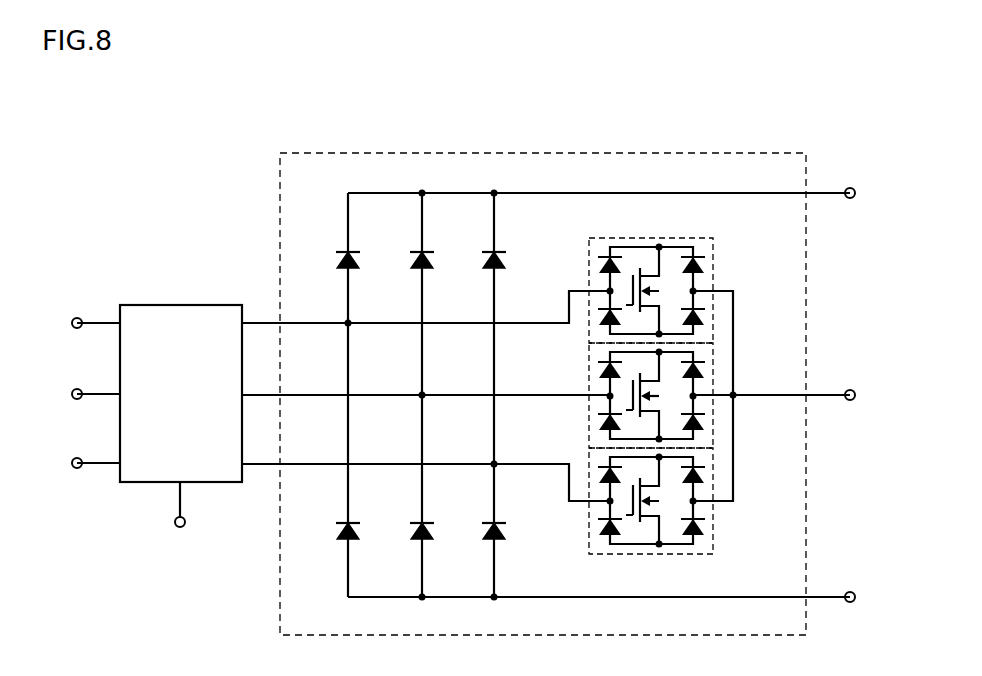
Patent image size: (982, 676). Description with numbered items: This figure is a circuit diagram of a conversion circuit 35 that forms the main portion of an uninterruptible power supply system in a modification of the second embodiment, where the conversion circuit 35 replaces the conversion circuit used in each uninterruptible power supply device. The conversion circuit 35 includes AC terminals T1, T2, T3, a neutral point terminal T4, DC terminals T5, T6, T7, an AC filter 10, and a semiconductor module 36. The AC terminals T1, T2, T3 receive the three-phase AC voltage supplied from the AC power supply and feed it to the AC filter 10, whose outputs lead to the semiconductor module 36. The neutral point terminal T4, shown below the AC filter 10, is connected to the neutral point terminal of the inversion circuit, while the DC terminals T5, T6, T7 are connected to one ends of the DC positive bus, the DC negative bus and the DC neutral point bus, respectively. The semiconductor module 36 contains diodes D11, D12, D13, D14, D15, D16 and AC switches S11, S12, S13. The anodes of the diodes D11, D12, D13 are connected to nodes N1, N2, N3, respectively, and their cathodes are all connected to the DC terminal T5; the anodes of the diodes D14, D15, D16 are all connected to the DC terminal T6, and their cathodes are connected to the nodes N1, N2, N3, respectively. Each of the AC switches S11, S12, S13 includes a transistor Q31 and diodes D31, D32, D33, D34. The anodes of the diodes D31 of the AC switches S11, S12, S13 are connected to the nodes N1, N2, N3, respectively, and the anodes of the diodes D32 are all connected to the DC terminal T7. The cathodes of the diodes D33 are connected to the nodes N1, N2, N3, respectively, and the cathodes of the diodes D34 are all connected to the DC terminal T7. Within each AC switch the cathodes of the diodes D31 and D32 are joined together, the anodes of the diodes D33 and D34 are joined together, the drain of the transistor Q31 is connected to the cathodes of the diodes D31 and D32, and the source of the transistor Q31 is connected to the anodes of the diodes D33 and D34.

The conversion circuit 35 is at (148, 120).
The semiconductor module 36 is at (368, 153).
The AC filter 10 is at (180, 305).
The AC terminal T1 is at (73, 318).
The AC terminal T2 is at (73, 389).
The AC terminal T3 is at (73, 458).
The neutral point terminal T4 is at (180, 527).
The DC terminal T5 is at (854, 188).
The DC terminal T6 is at (854, 592).
The DC terminal T7 is at (854, 390).
The node N1 is at (345, 327).
The node N2 is at (418, 399).
The node N3 is at (490, 462).
The diode D11 is at (342, 250).
The diode D12 is at (416, 250).
The diode D13 is at (488, 250).
The diode D14 is at (342, 522).
The diode D15 is at (416, 522).
The diode D16 is at (488, 522).
The diode D31 is at (606, 256).
The diode D32 is at (697, 256).
The diode D33 is at (604, 325).
The diode D34 is at (700, 313).
The transistor Q31 is at (636, 268).
The AC switch S11 is at (715, 253).
The AC switch S12 is at (715, 358).
The AC switch S13 is at (715, 539).